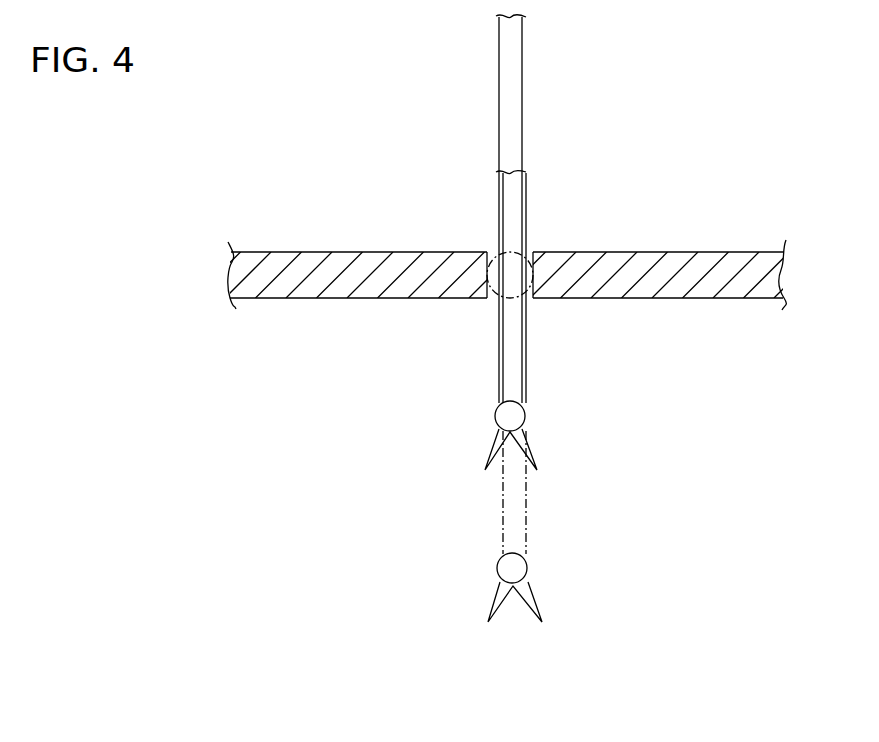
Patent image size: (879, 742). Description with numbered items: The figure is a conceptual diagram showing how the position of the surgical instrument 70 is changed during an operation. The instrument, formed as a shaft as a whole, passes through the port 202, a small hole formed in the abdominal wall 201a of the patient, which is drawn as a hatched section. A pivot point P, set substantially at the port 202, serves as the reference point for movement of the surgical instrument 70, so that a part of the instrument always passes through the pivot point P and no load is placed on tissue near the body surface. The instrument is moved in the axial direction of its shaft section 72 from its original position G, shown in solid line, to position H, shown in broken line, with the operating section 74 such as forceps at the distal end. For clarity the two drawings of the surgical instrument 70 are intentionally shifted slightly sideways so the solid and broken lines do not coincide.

The surgical instrument 70 is at (515, 42).
The shaft section 72 is at (499, 66).
The operating section 74 is at (492, 447).
The port 202 is at (527, 250).
The abdominal wall 201a is at (713, 252).
The position G is at (522, 105).
The position H is at (527, 378).
The pivot point P is at (496, 300).